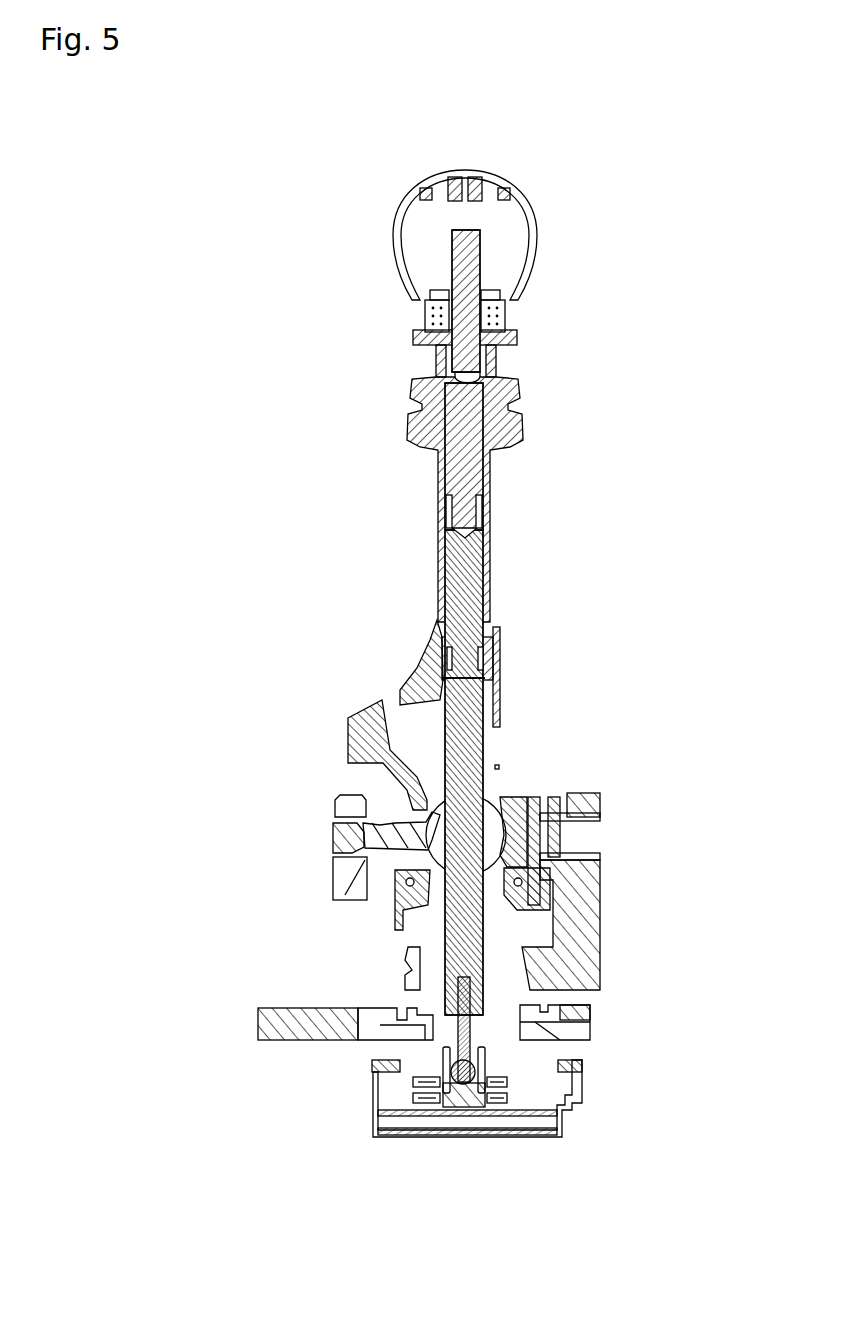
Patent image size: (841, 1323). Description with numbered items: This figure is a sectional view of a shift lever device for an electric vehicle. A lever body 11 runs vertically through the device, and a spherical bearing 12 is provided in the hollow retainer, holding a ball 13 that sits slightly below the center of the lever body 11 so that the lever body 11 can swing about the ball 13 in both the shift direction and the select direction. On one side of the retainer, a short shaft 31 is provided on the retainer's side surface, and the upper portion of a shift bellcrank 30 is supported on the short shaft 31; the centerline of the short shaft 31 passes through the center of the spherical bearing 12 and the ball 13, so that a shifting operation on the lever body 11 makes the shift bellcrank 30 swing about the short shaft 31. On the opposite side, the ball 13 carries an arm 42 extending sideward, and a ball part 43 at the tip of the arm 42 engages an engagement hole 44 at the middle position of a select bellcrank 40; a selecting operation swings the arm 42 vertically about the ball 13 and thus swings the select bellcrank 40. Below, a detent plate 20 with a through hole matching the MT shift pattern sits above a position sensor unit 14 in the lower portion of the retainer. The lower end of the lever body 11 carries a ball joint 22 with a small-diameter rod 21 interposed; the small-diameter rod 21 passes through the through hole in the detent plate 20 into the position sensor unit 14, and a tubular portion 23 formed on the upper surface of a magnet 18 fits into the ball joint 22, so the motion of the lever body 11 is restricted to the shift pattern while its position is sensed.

The lever body 11 is at (441, 622).
The spherical bearing 12 is at (517, 800).
The ball 13 is at (490, 810).
The position sensor unit 14 is at (378, 1100).
The magnet 18 is at (467, 1100).
The detent plate 20 is at (540, 1017).
The small-diameter rod 21 is at (458, 1033).
The ball joint 22 is at (580, 1088).
The tubular portion 23 is at (485, 1057).
The shift bellcrank 30 is at (592, 873).
The short shaft 31 is at (585, 820).
The select bellcrank 40 is at (340, 890).
The arm 42 is at (390, 840).
The ball part 43 is at (337, 850).
The engagement hole 44 is at (337, 828).